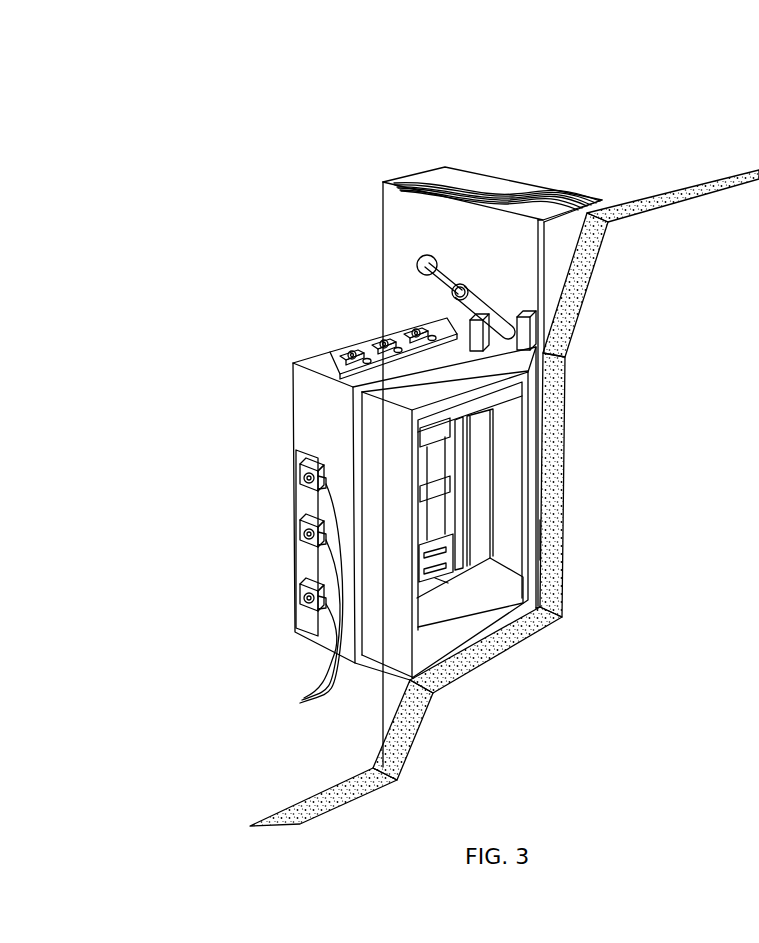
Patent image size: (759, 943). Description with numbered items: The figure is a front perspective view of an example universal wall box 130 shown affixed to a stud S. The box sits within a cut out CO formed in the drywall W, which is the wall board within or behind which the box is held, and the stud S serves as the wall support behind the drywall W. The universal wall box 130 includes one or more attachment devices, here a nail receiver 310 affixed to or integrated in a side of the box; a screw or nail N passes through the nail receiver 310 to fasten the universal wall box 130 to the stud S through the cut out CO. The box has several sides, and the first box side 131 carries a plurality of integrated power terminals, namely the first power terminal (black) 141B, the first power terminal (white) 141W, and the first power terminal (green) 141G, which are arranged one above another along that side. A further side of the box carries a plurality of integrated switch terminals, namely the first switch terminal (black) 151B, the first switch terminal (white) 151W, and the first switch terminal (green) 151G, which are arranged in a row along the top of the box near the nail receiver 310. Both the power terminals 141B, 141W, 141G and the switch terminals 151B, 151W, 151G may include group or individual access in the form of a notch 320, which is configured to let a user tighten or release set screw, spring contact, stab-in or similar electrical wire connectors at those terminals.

The stud S is at (497, 182).
The nail N is at (415, 261).
The nail receiver 310 is at (486, 312).
The drywall W is at (672, 303).
The first switch terminal (green) 151G is at (409, 333).
The first switch terminal (white) 151W is at (378, 340).
The first switch terminal (black) 151B is at (347, 352).
The notch 320 is at (330, 387).
The first box side 131 is at (320, 420).
The universal wall box 130 is at (312, 499).
The first power terminal (black) 141B is at (317, 461).
The first power terminal (white) 141W is at (305, 518).
The first power terminal (green) 141G is at (305, 581).
The cut out CO is at (556, 537).